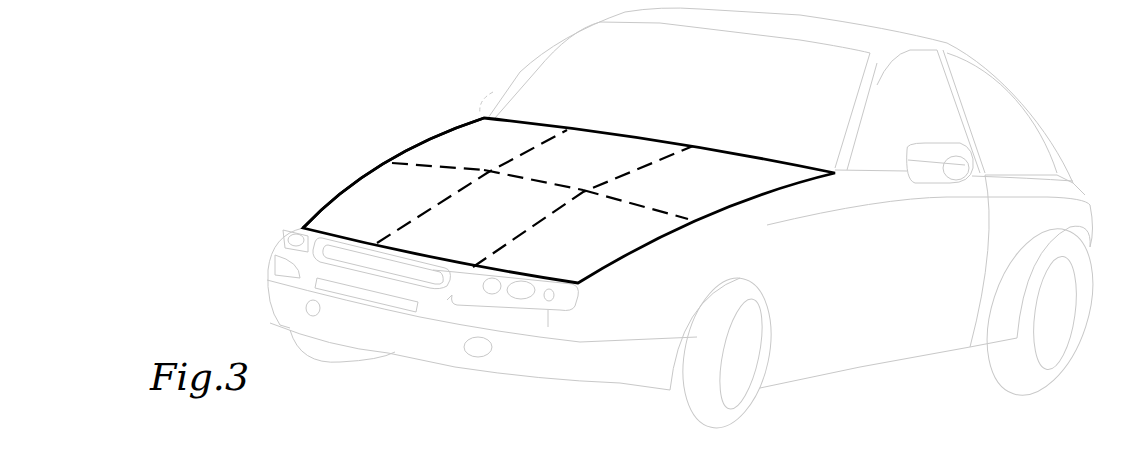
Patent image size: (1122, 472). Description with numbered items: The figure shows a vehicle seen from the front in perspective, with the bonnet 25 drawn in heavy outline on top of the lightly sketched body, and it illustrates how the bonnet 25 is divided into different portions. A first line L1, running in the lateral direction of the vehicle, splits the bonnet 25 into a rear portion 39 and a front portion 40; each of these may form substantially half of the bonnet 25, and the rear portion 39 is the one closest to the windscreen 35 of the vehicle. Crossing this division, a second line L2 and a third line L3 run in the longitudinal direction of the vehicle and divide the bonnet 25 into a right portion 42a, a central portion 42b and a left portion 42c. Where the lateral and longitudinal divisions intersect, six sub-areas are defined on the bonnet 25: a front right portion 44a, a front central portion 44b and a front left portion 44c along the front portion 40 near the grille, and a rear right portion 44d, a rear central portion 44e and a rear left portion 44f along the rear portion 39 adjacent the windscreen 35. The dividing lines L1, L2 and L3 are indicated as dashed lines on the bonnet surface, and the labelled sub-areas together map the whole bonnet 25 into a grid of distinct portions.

The bonnet 25 is at (272, 80).
The windscreen 35 is at (709, 81).
The rear portion 39 is at (435, 128).
The front portion 40 is at (345, 172).
The right portion 42a is at (522, 128).
The central portion 42b is at (618, 145).
The left portion 42c is at (723, 163).
The front right portion 44a is at (417, 194).
The front central portion 44b is at (505, 214).
The front left portion 44c is at (617, 234).
The rear right portion 44d is at (458, 151).
The rear central portion 44e is at (595, 168).
The rear left portion 44f is at (668, 190).
The first line L1 is at (660, 210).
The second line L2 is at (395, 228).
The third line L3 is at (493, 250).